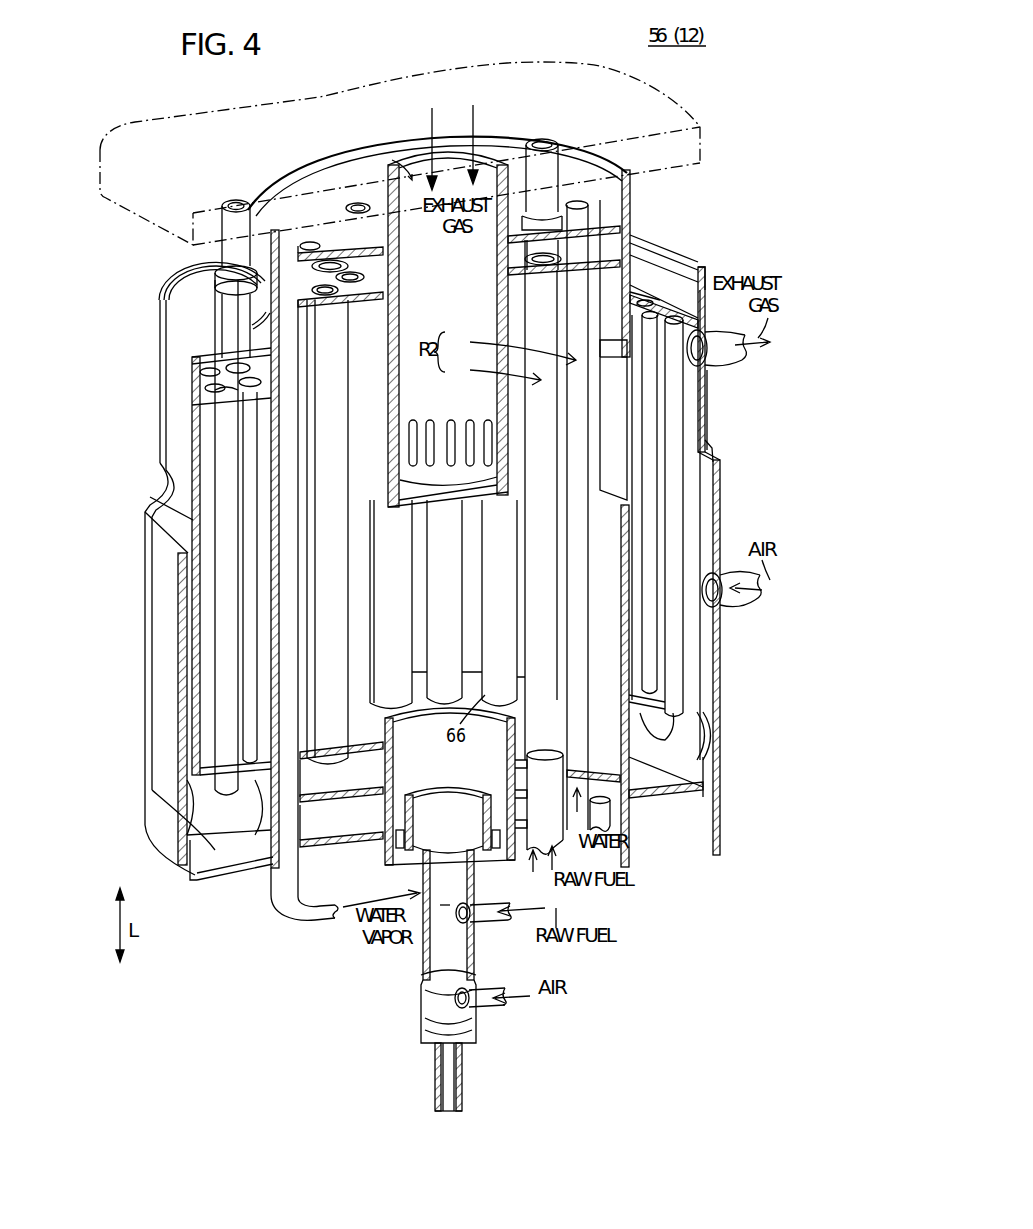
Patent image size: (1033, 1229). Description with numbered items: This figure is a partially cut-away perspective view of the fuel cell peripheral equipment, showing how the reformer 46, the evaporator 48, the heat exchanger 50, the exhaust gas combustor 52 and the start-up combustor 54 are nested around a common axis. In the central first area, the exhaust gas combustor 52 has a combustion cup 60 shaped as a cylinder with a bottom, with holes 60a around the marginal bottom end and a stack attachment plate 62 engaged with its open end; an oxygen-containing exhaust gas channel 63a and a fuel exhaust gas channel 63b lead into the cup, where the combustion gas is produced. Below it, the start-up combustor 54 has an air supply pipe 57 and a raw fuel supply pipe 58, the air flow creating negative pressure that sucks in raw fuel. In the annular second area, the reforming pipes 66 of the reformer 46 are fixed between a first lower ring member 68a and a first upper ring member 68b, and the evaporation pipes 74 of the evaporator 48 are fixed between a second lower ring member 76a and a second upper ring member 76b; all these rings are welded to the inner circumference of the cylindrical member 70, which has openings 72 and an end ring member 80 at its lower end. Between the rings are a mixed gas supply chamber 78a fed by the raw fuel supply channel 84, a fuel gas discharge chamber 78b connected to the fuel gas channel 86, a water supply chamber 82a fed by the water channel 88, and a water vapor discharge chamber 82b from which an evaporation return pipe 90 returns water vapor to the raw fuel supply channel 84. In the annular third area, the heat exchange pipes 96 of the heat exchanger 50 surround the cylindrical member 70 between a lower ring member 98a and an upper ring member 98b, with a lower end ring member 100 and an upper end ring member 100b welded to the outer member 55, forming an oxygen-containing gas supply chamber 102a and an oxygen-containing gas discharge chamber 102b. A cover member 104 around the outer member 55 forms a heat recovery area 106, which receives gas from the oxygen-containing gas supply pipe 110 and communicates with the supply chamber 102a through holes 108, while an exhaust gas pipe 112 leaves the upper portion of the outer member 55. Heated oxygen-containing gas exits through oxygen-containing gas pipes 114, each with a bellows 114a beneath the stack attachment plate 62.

The reformer 46 is at (495, 369).
The evaporator 48 is at (513, 346).
The heat exchanger 50 is at (183, 748).
The exhaust gas combustor 52 is at (437, 153).
The start-up combustor 54 is at (409, 980).
The outer member 55 is at (716, 440).
The air supply pipe 57 is at (478, 985).
The raw fuel supply pipe 58 is at (458, 918).
The combustion cup 60 is at (392, 238).
The holes 60a is at (432, 432).
The stack attachment plate 62 is at (672, 118).
The oxygen-containing exhaust gas channel 63a is at (428, 135).
The fuel exhaust gas channel 63b is at (478, 125).
The reforming pipes 66 is at (340, 590).
The first lower ring member 68a is at (394, 765).
The first upper ring member 68b is at (608, 262).
The cylindrical member 70 is at (660, 530).
The openings 72 is at (650, 495).
The evaporation pipes 74 is at (575, 630).
The second lower ring member 76a is at (360, 790).
The second upper ring member 76b is at (600, 240).
The mixed gas supply chamber 78a is at (415, 822).
The fuel gas discharge chamber 78b is at (520, 262).
The end ring member 80 is at (375, 838).
The water supply chamber 82a is at (358, 838).
The water vapor discharge chamber 82b is at (598, 190).
The raw fuel supply channel 84 is at (522, 778).
The fuel gas channel 86 is at (545, 150).
The water channel 88 is at (600, 812).
The evaporation return pipe 90 is at (292, 882).
The heat exchange pipes 96 is at (225, 448).
The lower ring member 98a is at (690, 690).
The upper ring member 98b is at (712, 412).
The lower end ring member 100 is at (216, 870).
The upper end ring member 100b is at (670, 272).
The oxygen-containing gas supply chamber 102a is at (215, 820).
The oxygen-containing gas discharge chamber 102b is at (700, 285).
The cover member 104 is at (148, 628).
The heat recovery area 106 is at (190, 705).
The holes 108 is at (715, 732).
The oxygen-containing gas supply pipe 110 is at (735, 596).
The exhaust gas pipe 112 is at (720, 362).
The oxygen-containing gas pipes 114 is at (238, 200).
The bellows 114a is at (188, 268).